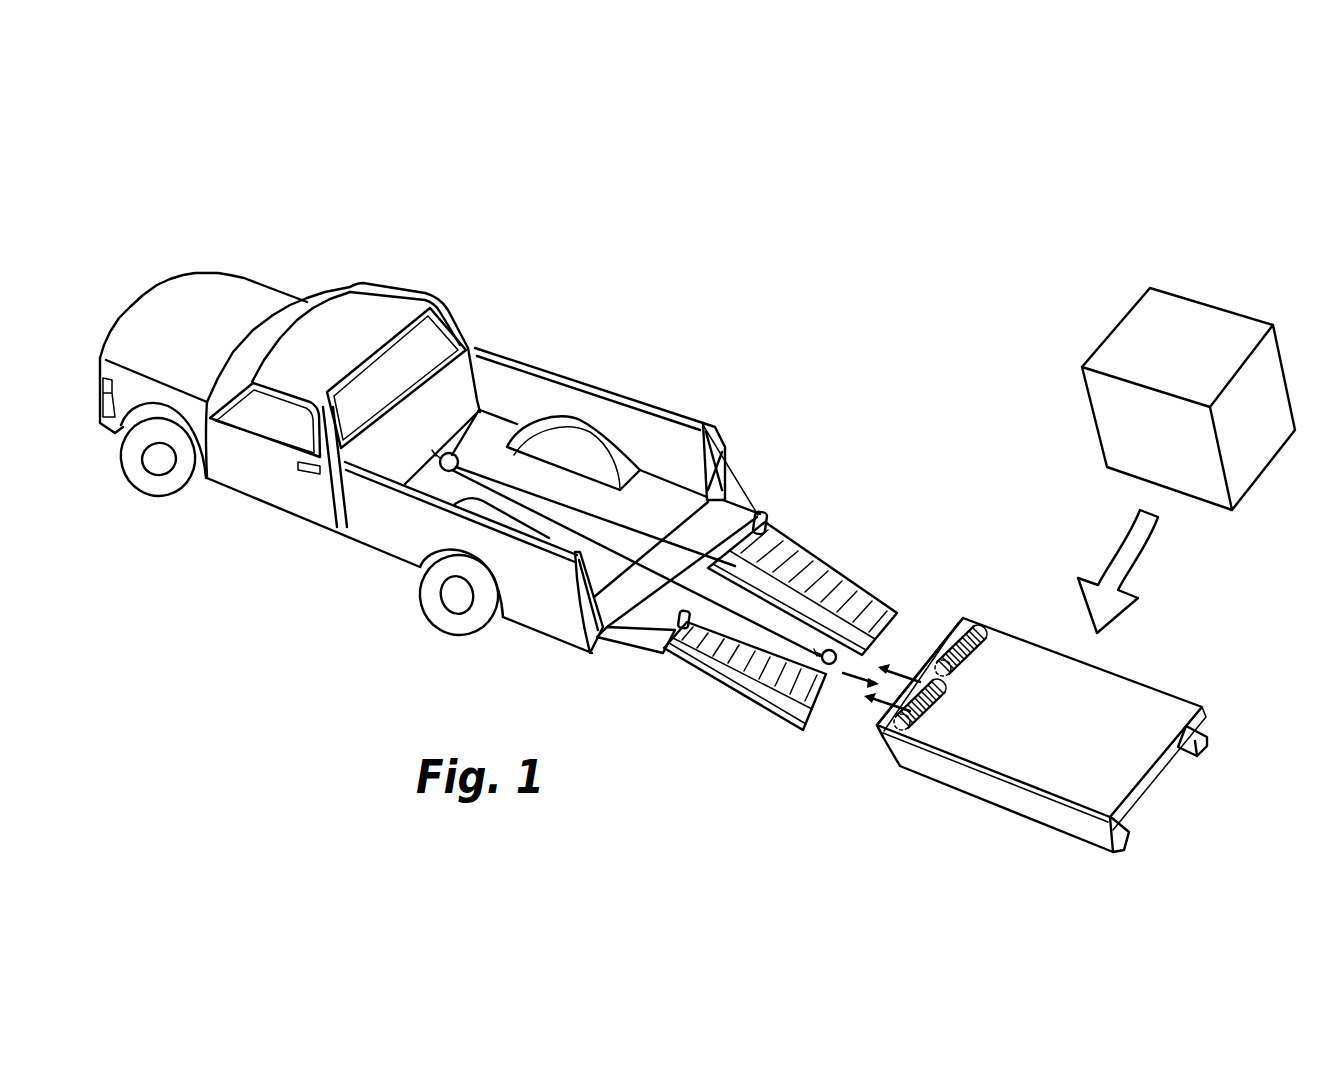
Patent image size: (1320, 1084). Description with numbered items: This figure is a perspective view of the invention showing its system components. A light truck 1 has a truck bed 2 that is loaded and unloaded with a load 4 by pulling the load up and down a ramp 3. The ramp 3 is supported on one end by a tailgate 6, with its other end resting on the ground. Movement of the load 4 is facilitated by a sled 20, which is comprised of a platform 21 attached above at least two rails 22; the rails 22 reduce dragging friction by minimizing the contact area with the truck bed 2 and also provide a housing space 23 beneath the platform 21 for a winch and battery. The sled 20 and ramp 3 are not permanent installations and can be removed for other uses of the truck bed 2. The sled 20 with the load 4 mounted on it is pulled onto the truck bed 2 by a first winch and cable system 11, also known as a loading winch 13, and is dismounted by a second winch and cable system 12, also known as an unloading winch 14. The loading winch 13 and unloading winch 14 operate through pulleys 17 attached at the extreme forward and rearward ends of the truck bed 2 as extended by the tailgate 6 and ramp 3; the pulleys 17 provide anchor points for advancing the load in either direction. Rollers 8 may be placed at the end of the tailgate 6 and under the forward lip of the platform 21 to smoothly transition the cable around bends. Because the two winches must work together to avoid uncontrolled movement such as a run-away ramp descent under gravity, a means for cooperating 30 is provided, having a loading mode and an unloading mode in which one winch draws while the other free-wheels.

The light truck 1 is at (508, 284).
The truck bed 2 is at (515, 434).
The ramp 3 is at (753, 673).
The load 4 is at (1207, 330).
The tailgate 6 is at (626, 638).
The rollers 8 is at (766, 515).
The first winch and cable system 11 is at (915, 629).
The second winch and cable system 12 is at (876, 732).
The loading winch 13 is at (943, 650).
The unloading winch 14 is at (898, 724).
The pulleys 17 is at (449, 452).
The sled 20 is at (1170, 659).
The platform 21 is at (1187, 700).
The rails 22 is at (1207, 741).
The housing space 23 is at (1178, 765).
The means for cooperating 30 is at (766, 446).